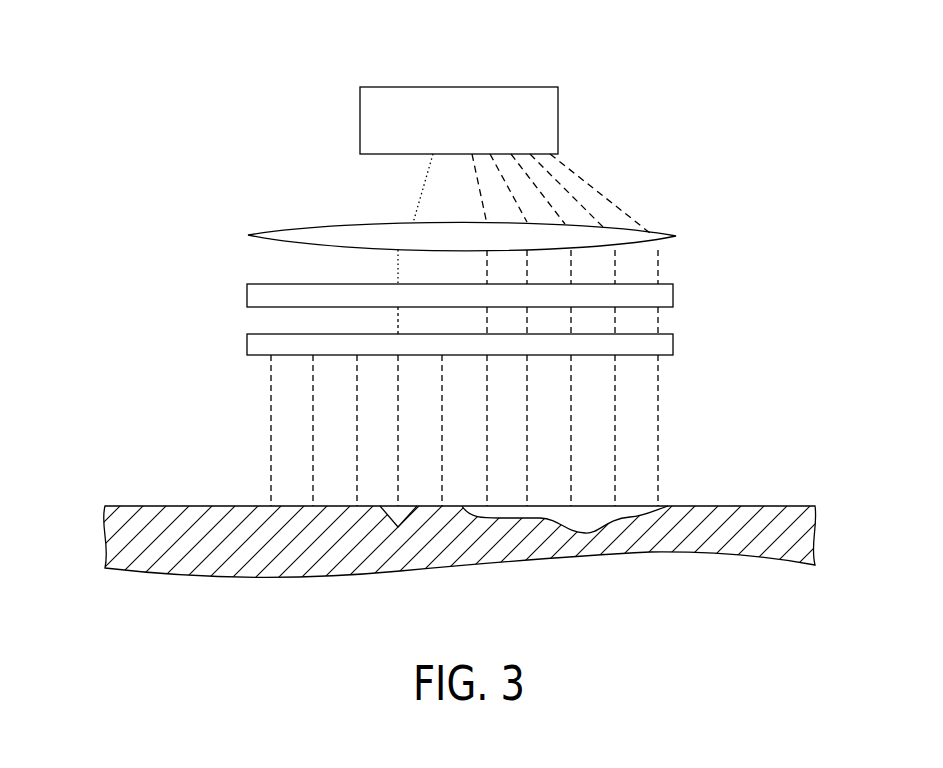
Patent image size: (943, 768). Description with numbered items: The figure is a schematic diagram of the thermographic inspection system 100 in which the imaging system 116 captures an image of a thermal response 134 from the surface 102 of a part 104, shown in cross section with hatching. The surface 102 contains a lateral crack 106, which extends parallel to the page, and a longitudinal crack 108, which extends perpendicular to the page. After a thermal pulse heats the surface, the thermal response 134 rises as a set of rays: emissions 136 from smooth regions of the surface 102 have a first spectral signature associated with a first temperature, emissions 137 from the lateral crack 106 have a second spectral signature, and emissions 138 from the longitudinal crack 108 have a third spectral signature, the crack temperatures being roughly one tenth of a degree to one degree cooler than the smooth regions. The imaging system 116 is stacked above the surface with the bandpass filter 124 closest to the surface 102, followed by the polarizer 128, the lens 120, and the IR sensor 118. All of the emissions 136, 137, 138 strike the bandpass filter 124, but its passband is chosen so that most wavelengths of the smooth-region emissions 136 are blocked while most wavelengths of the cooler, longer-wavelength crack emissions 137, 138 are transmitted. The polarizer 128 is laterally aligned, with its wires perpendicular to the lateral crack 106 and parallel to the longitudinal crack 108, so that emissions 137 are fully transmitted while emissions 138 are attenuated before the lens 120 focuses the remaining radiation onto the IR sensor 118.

The thermographic inspection system 100 is at (306, 101).
The surface 102 is at (791, 508).
The part 104 is at (780, 553).
The lateral crack 106 is at (593, 518).
The longitudinal crack 108 is at (395, 522).
The imaging system 116 is at (705, 90).
The IR sensor 118 is at (521, 87).
The lens 120 is at (676, 235).
The bandpass filter 124 is at (673, 345).
The polarizer 128 is at (673, 295).
The thermal response 134 is at (203, 392).
The emissions from smooth regions 136 is at (313, 473).
The emissions from lateral crack 137 is at (615, 455).
The emissions from longitudinal crack 138 is at (398, 466).